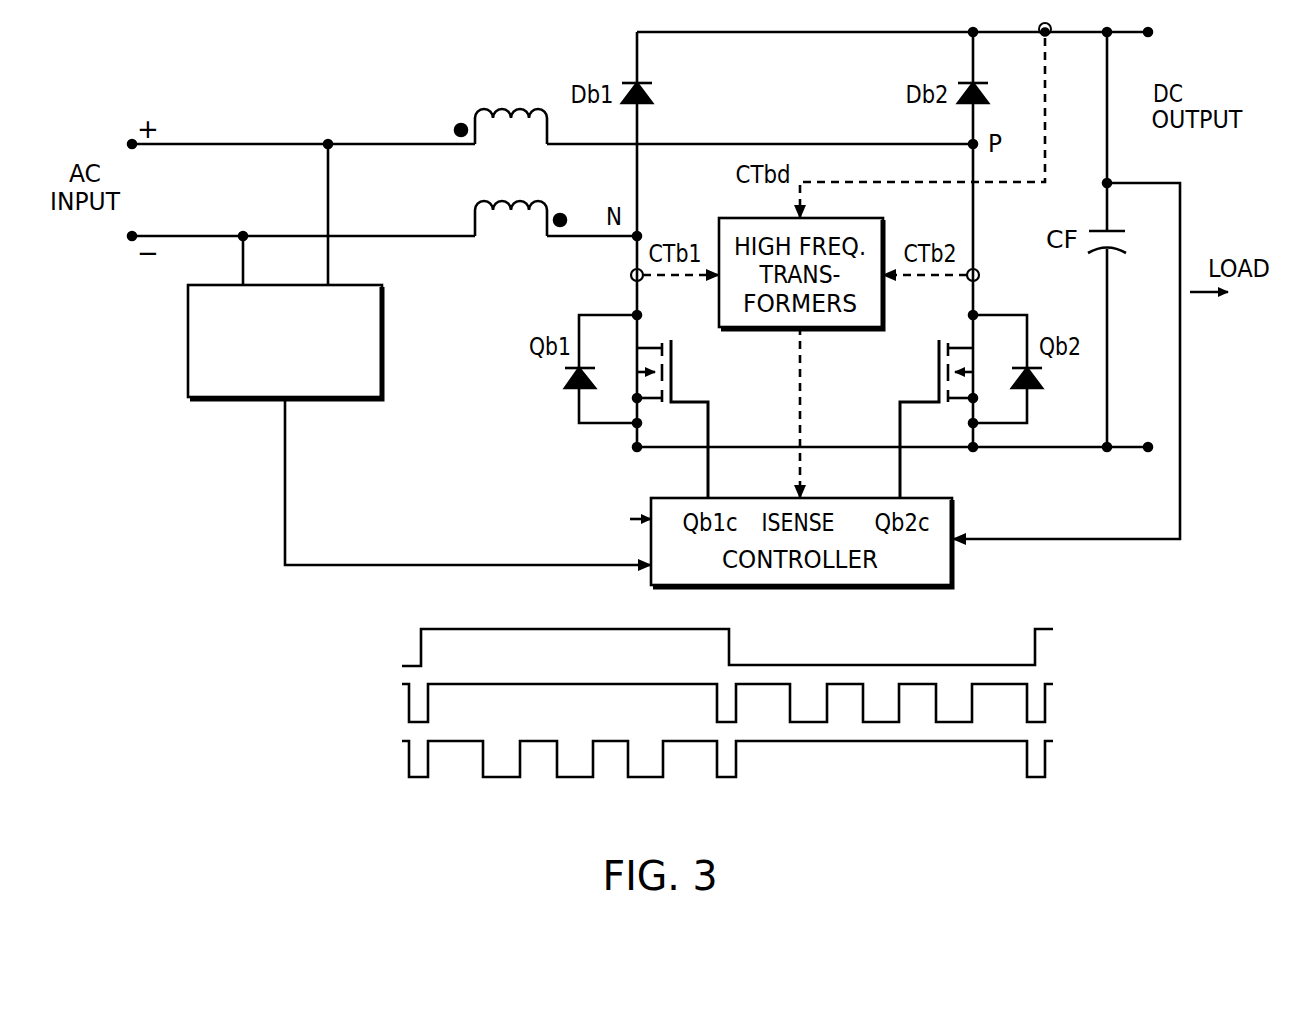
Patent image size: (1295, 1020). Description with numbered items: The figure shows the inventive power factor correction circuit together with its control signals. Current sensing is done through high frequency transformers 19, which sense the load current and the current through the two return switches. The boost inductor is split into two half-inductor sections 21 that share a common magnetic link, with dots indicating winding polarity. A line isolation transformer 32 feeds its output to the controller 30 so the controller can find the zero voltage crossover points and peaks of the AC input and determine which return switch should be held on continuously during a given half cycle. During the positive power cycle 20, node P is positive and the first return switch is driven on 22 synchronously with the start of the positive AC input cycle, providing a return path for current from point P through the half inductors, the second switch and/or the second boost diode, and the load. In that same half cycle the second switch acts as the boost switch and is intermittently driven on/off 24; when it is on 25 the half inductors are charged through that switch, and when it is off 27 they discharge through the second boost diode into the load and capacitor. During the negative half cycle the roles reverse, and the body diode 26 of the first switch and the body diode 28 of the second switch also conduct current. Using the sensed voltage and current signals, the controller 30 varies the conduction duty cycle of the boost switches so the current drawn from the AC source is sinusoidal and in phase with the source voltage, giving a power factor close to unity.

The high frequency transformers 19 is at (776, 328).
The positive power cycle 20 is at (425, 627).
The Lb/2 sections 21 is at (471, 81).
The Qb1 driven on 22 is at (416, 706).
The Qb2 intermittently driven on/off 24 is at (393, 763).
The Qb2 on 25 is at (437, 743).
The body diode of Qb1 26 is at (570, 383).
The Qb2 off 27 is at (632, 778).
The body diode of Qb2 28 is at (1034, 391).
The controller 30 is at (955, 510).
The line isolation transformer 32 is at (188, 337).